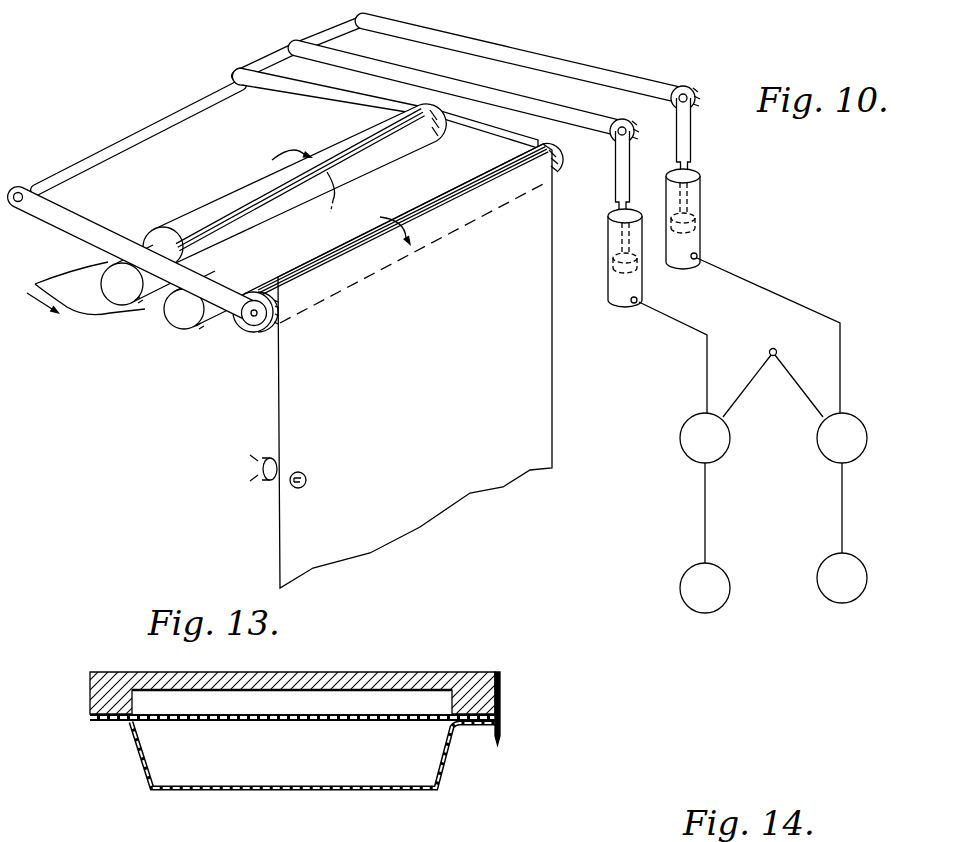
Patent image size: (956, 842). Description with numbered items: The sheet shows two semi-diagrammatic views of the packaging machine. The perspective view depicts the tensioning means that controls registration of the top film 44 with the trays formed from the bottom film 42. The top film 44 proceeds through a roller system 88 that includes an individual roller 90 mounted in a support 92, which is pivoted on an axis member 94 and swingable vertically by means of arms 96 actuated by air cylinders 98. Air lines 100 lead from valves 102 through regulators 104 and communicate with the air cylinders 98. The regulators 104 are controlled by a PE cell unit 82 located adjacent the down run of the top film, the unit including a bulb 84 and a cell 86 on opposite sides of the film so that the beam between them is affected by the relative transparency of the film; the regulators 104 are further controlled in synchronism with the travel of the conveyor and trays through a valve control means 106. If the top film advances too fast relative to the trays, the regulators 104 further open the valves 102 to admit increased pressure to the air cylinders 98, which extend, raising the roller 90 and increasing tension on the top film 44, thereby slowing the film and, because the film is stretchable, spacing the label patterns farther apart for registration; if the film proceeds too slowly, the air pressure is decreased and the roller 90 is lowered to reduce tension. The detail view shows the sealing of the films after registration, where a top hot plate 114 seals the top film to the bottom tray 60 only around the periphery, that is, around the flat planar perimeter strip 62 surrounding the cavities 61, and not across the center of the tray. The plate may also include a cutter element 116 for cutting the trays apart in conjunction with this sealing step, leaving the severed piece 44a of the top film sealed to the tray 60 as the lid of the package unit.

In FIG. 13, the film or sheet material 42 is at (134, 762).
In FIG. 10, the top film 44 is at (90, 312).
In FIG. 13, the top film 44 is at (108, 706).
In FIG. 13, the severed piece of top film 44a is at (407, 715).
In FIG. 13, the bottom tray 60 is at (148, 793).
In FIG. 13, the cavities 61 is at (325, 788).
In FIG. 13, the planar perimeter strip 62 is at (468, 725).
In FIG. 10, the PE cell unit 82 is at (256, 442).
In FIG. 10, the bulb 84 is at (308, 482).
In FIG. 10, the cell 86 is at (262, 478).
In FIG. 10, the roller system 88 is at (160, 328).
In FIG. 10, the roller 90 is at (266, 331).
In FIG. 10, the support 92 is at (505, 120).
In FIG. 10, the axis member 94 is at (160, 117).
In FIG. 10, the arms 96 is at (650, 73).
In FIG. 10, the air cylinders 98 is at (680, 257).
In FIG. 10, the air lines 100 is at (727, 288).
In FIG. 10, the valves 102 is at (728, 602).
In FIG. 10, the regulators 104 is at (795, 471).
In FIG. 10, the valve control means 106 is at (780, 333).
In FIG. 13, the top hot plate 114 is at (362, 670).
In FIG. 13, the cutter element 116 is at (502, 732).